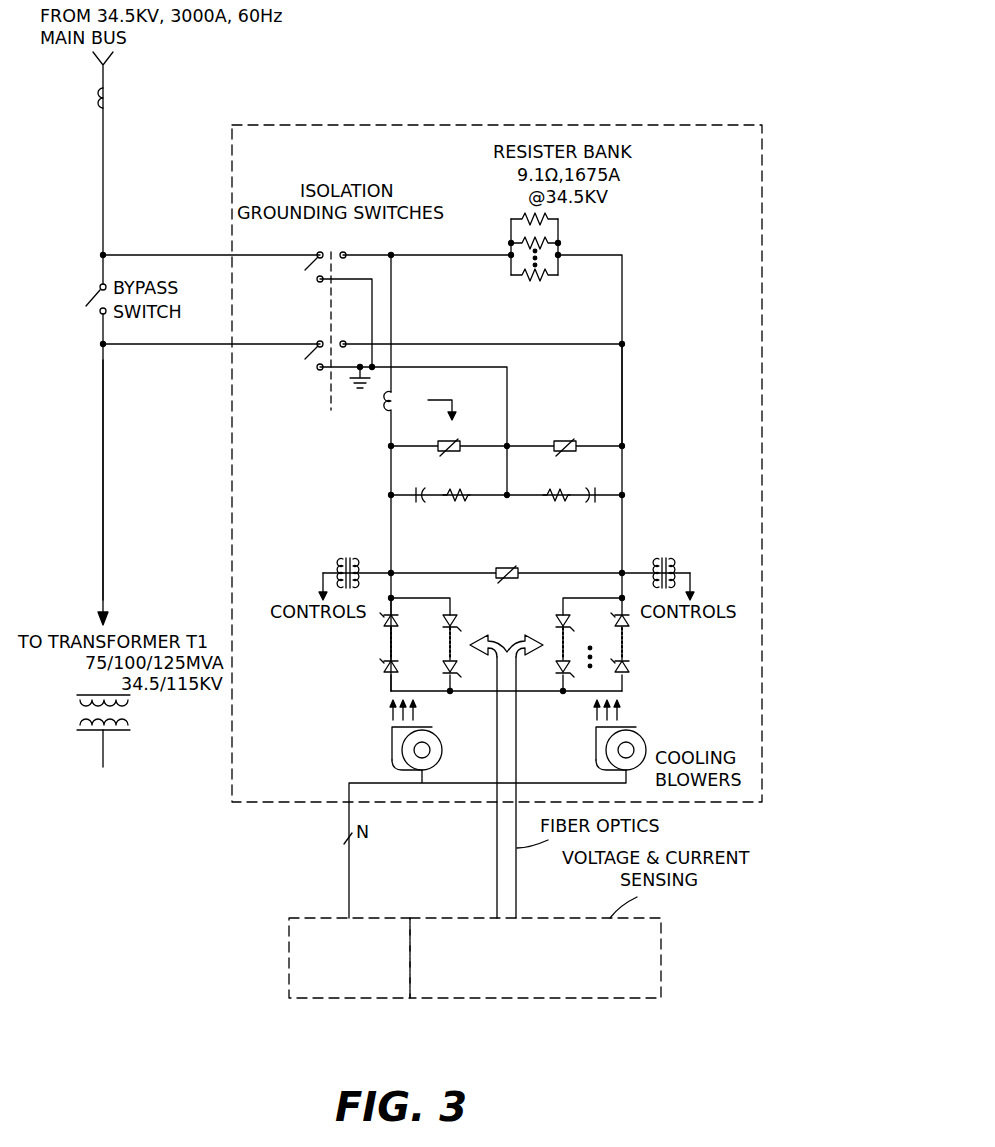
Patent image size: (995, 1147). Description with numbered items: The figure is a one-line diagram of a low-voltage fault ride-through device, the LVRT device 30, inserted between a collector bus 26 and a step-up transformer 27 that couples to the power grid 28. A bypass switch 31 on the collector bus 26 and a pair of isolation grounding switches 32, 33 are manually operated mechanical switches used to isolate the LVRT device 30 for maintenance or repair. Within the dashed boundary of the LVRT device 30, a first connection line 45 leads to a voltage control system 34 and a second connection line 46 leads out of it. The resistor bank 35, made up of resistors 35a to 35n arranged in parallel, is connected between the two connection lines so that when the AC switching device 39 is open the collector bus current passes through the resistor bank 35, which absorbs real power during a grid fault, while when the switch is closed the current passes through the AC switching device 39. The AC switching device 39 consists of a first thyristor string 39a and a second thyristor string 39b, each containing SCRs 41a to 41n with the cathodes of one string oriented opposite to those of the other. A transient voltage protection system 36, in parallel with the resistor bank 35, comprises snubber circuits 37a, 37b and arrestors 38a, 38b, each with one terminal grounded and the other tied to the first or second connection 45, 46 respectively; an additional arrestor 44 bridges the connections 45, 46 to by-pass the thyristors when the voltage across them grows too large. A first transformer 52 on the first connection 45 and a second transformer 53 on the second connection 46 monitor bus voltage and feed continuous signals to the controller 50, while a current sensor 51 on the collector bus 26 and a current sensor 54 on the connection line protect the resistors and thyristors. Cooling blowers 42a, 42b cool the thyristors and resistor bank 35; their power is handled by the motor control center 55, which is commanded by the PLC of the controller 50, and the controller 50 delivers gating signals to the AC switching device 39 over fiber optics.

The collector bus 26 is at (100, 428).
The step-up transformer 27 is at (130, 711).
The power grid 28 is at (104, 762).
The LVRT device 30 is at (675, 125).
The bypass switch 31 is at (90, 300).
The isolation grounding switch 32 is at (305, 271).
The isolation grounding switch 33 is at (305, 363).
The voltage control system 34 is at (274, 768).
The resistor bank 35 is at (593, 249).
The resistor 35a is at (518, 212).
The resistor 35n is at (561, 301).
The transient voltage protection system 36 is at (569, 470).
The RC component 37a is at (432, 500).
The RC component 37b is at (582, 500).
The arrestor 38a is at (452, 453).
The arrestor 38b is at (568, 440).
The AC switching device 39 is at (506, 677).
The first thyristor string 39a is at (385, 621).
The second thyristor string 39b is at (451, 677).
The SCR 41a is at (615, 618).
The SCR 41n is at (592, 677).
The cooling blower 42a is at (392, 765).
The cooling blower 42b is at (596, 765).
The arrestor 44 is at (506, 583).
The first connection line 45 is at (391, 310).
The second connection line 46 is at (630, 352).
The controller 50 is at (662, 963).
The current sensor 51 is at (99, 97).
The first transformer 52 is at (345, 556).
The second transformer 53 is at (667, 556).
The current sensor 54 is at (398, 395).
The motor control center 55 is at (289, 956).